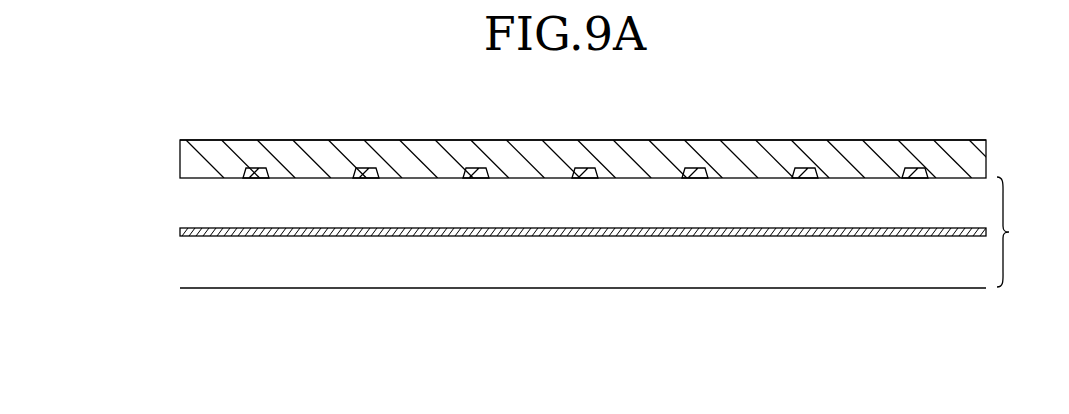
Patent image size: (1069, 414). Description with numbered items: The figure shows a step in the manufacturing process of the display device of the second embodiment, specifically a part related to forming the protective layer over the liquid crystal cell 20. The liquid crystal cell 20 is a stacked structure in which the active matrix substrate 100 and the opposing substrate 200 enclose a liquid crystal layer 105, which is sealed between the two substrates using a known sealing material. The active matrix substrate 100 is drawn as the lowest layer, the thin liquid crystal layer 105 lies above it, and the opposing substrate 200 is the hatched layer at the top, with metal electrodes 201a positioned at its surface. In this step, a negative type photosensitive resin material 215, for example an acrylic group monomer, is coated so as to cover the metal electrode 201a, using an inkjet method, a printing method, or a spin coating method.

The liquid crystal cell 20 is at (1018, 232).
The active matrix substrate 100 is at (188, 268).
The liquid crystal layer 105 is at (180, 231).
The opposing substrate 200 is at (188, 195).
The metal electrode 201a is at (365, 180).
The negative type photosensitive resin material 215 is at (429, 140).